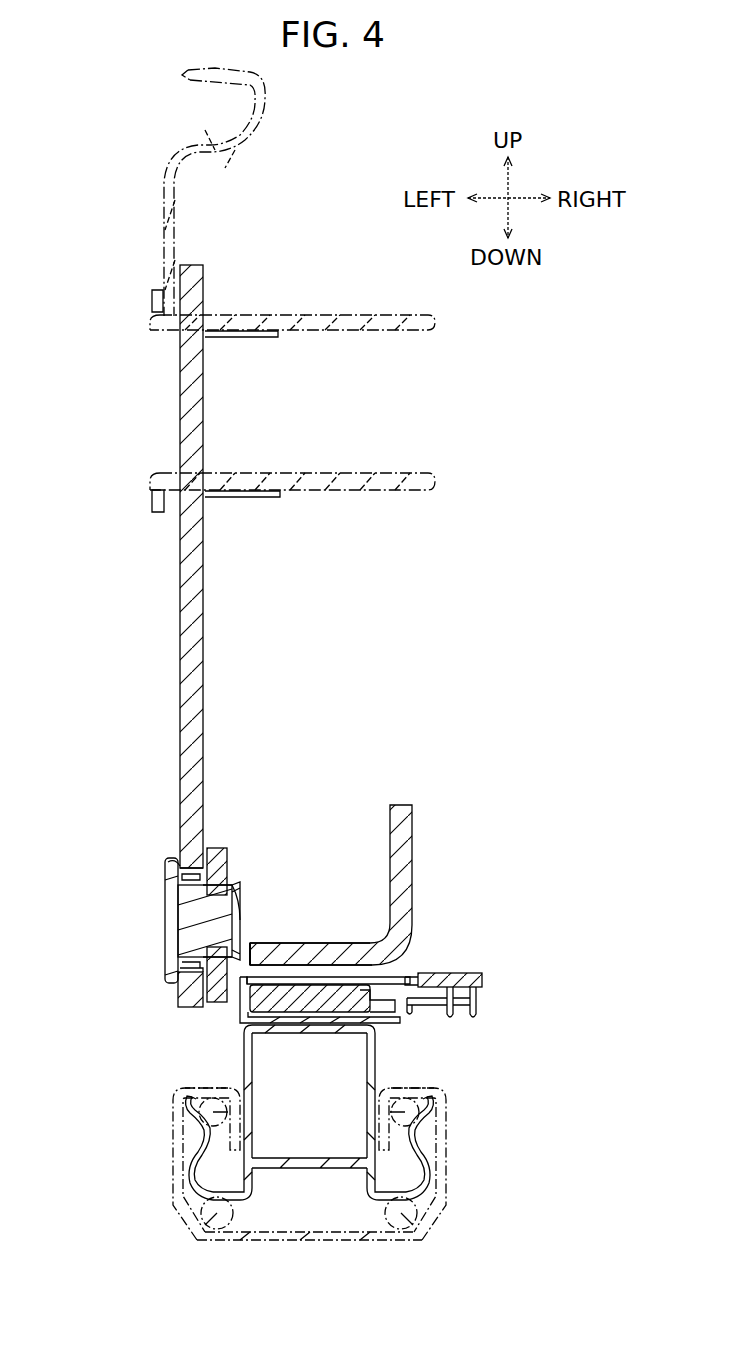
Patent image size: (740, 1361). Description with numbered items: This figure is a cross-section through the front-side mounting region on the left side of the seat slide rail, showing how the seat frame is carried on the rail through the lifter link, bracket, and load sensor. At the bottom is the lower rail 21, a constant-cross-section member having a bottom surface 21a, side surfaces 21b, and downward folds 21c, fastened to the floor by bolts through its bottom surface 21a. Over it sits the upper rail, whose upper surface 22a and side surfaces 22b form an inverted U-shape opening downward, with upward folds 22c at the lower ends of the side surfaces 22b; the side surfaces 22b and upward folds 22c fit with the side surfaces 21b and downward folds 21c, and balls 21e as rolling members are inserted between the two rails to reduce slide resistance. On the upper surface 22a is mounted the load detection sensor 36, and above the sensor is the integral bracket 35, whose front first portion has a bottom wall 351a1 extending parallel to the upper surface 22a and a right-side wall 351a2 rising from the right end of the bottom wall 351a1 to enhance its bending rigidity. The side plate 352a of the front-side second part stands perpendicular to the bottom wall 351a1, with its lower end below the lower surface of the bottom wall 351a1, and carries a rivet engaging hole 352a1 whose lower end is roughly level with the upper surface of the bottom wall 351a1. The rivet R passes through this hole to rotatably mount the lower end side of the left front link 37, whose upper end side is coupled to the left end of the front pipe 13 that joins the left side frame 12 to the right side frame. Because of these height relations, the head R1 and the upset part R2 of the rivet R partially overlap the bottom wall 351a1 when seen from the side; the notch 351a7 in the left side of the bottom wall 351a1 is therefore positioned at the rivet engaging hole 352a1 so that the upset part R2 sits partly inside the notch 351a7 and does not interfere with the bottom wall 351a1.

The left side frame 12 is at (258, 113).
The front pipe 13 is at (320, 318).
The left front link 37 is at (180, 662).
The integral bracket 35 is at (440, 850).
The bottom wall 351a1 is at (345, 942).
The right-side wall 351a2 is at (383, 830).
The notch 351a7 is at (248, 948).
The side plate 352a is at (217, 848).
The rivet engaging hole 352a1 is at (203, 907).
The rivet R is at (165, 930).
The head R1 is at (180, 865).
The upset part R2 is at (240, 905).
The load detection sensor 36 is at (452, 973).
The upper surface 22a is at (303, 1023).
The side surfaces 22b is at (244, 1058).
The upward folds 22c is at (210, 1192).
The lower rail 21 is at (311, 1185).
The bottom surface 21a is at (328, 1245).
The side surfaces 21b is at (175, 1158).
The downward folds 21c is at (200, 1090).
The balls 21e is at (213, 1112).